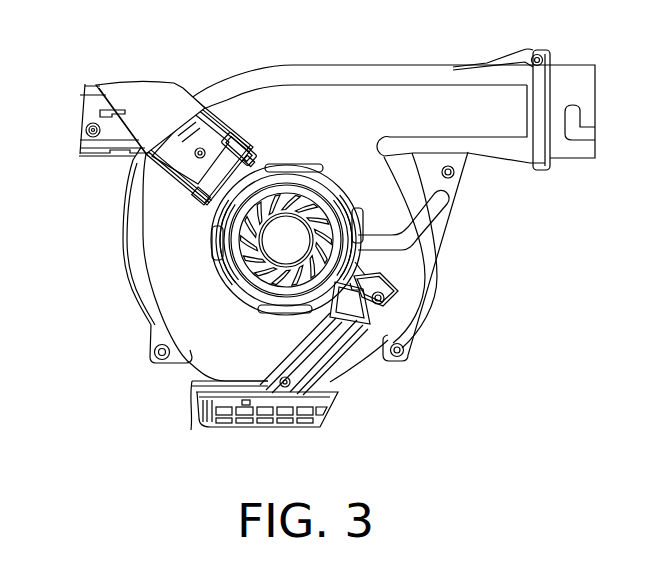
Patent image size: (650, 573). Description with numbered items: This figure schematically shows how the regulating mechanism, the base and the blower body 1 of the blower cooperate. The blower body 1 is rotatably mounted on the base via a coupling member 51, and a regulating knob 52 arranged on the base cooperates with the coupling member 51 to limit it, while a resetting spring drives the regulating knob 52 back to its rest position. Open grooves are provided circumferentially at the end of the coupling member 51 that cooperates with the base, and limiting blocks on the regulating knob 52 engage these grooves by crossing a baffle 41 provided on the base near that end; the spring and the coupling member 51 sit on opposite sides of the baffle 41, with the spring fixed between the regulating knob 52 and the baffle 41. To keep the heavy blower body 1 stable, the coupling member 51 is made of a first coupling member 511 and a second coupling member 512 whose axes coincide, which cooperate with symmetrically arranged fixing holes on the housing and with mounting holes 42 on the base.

The blower body 1 is at (180, 287).
The baffle 41 is at (165, 178).
The mounting holes 42 is at (362, 307).
The coupling member 51 is at (207, 207).
The first coupling member 511 is at (245, 147).
The second coupling member 512 is at (346, 307).
The regulating knob 52 is at (165, 108).